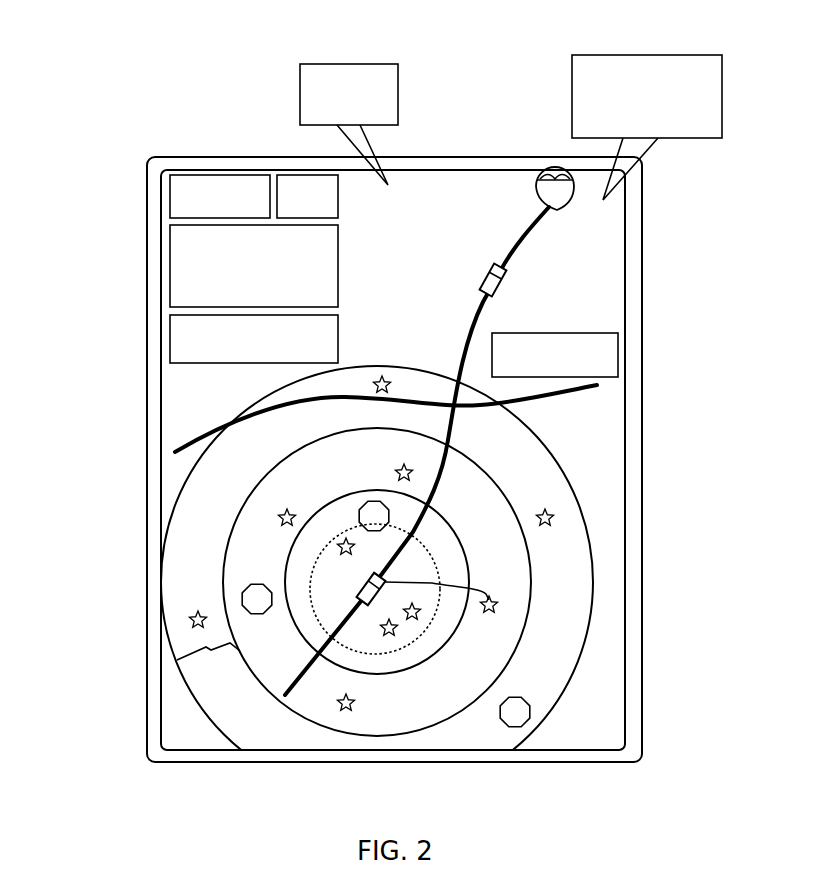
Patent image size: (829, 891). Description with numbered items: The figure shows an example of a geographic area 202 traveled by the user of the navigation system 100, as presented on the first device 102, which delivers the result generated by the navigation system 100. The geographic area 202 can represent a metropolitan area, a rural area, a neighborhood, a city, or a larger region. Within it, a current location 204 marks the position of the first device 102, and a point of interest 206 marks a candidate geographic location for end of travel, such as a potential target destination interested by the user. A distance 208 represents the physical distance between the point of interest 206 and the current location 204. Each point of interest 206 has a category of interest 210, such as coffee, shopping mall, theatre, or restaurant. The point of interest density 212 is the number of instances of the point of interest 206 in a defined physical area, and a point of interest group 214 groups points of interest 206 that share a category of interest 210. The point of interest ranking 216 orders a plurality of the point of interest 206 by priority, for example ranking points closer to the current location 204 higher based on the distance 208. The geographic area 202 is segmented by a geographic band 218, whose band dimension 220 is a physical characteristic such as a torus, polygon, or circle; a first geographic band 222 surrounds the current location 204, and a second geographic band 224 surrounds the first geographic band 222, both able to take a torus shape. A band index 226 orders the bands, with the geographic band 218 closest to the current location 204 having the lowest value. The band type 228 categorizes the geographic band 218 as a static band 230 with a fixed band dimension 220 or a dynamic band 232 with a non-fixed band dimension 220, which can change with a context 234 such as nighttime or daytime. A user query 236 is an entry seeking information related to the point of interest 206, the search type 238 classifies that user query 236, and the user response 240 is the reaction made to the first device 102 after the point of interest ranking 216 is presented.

The navigation system 100 is at (158, 54).
The first device 102 is at (170, 148).
The geographic area 202 is at (402, 456).
The current location 204 is at (362, 583).
The point of interest 206 is at (548, 512).
The distance 208 is at (432, 583).
The category of interest 210 is at (175, 175).
The point of interest density 212 is at (393, 637).
The point of interest group 214 is at (316, 526).
The point of interest ranking 216 is at (190, 230).
The geographic band 218 is at (557, 444).
The band dimension 220 is at (202, 650).
The first geographic band 222 is at (292, 636).
The second geographic band 224 is at (536, 612).
The band index 226 is at (525, 717).
The band type 228 is at (205, 334).
The static band 230 is at (166, 325).
The dynamic band 232 is at (166, 355).
The context 234 is at (308, 185).
The user query 236 is at (310, 105).
The search type 238 is at (605, 345).
The user response 240 is at (588, 98).